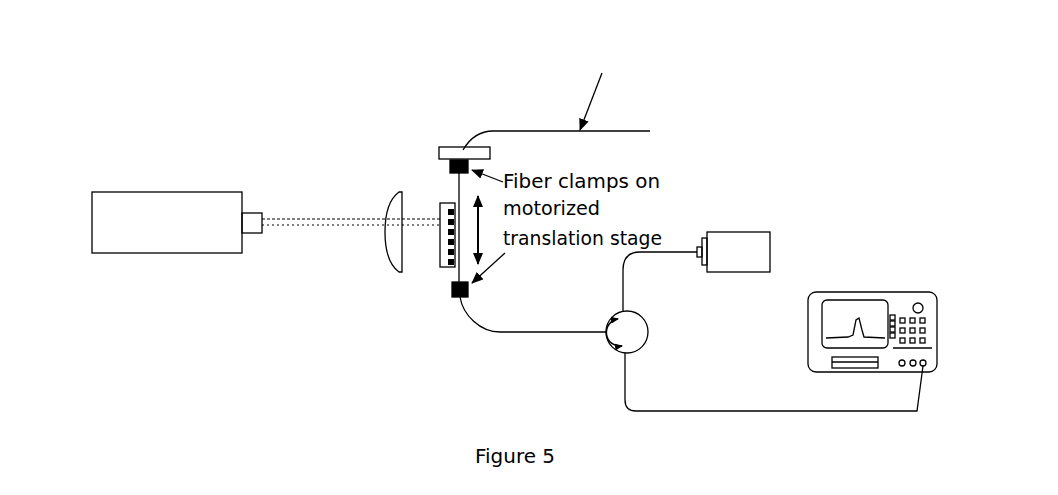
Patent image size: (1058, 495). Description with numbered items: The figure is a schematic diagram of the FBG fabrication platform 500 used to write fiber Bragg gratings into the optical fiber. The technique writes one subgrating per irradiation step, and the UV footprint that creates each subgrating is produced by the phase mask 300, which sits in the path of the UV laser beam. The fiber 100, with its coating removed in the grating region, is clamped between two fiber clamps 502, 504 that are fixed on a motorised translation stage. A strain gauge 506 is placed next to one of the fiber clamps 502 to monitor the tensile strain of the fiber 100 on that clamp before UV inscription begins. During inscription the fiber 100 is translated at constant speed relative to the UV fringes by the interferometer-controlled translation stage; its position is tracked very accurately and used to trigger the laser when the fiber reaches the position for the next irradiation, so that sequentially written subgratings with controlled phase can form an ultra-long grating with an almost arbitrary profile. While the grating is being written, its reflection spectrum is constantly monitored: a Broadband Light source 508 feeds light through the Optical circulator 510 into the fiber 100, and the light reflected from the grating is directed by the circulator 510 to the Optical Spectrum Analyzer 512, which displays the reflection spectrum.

The fiber 100 is at (455, 281).
The phase mask 300 is at (440, 192).
The FBG fabrication platform 500 is at (330, 348).
The fiber clamp 502 is at (447, 168).
The fiber clamp 504 is at (447, 288).
The strain gauge 506 is at (457, 147).
The Broadband Light source 508 is at (770, 248).
The Optical circulator 510 is at (650, 330).
The Optical Spectrum Analyzer 512 is at (918, 288).